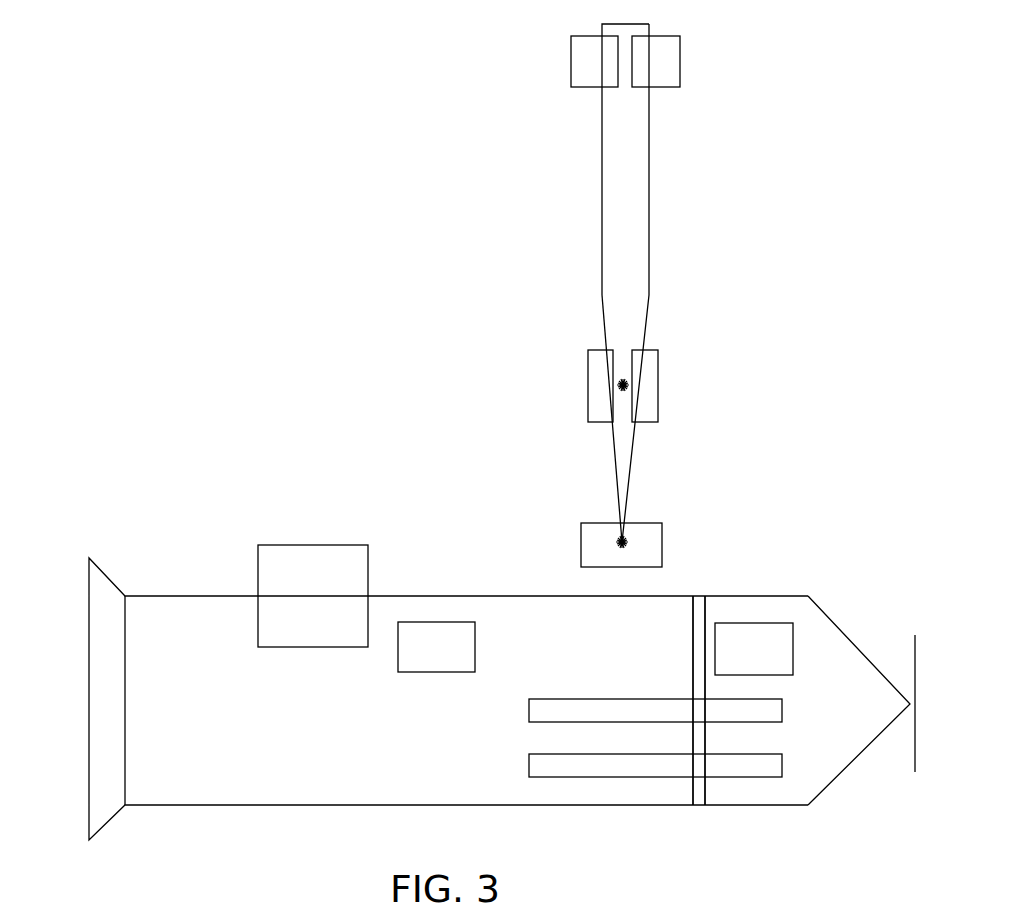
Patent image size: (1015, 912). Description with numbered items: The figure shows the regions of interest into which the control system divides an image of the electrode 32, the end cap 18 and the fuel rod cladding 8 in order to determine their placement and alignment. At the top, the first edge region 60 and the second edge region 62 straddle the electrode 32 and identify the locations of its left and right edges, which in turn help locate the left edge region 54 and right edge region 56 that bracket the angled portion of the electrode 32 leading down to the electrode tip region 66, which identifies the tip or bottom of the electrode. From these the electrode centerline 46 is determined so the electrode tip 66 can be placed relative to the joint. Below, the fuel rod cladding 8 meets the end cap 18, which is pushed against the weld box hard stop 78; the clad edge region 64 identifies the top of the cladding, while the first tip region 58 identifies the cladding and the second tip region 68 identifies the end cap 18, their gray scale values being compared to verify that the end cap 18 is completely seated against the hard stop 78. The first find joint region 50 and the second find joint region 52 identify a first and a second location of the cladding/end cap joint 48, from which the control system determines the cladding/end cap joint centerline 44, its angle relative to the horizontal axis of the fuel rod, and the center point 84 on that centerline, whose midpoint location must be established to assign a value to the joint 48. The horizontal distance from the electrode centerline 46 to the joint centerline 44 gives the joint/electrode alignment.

The fuel rod cladding 8 is at (168, 596).
The end cap 18 is at (782, 596).
The electrode 32 is at (601, 178).
The cladding/end cap joint centerline 44 is at (697, 765).
The electrode centerline 46 is at (625, 226).
The cladding/end cap joint 48 is at (700, 805).
The find joint 1 50 is at (782, 708).
The find joint 2 52 is at (782, 762).
The left edge 54 is at (588, 397).
The right edge 56 is at (658, 415).
The tip 1 58 is at (445, 632).
The edge 1 60 is at (585, 87).
The edge 2 62 is at (680, 87).
The clad edge 64 is at (360, 545).
The electrode tip 66 is at (662, 562).
The tip 2 68 is at (730, 628).
The weld box hard stop 78 is at (915, 672).
The center point 84 is at (697, 735).